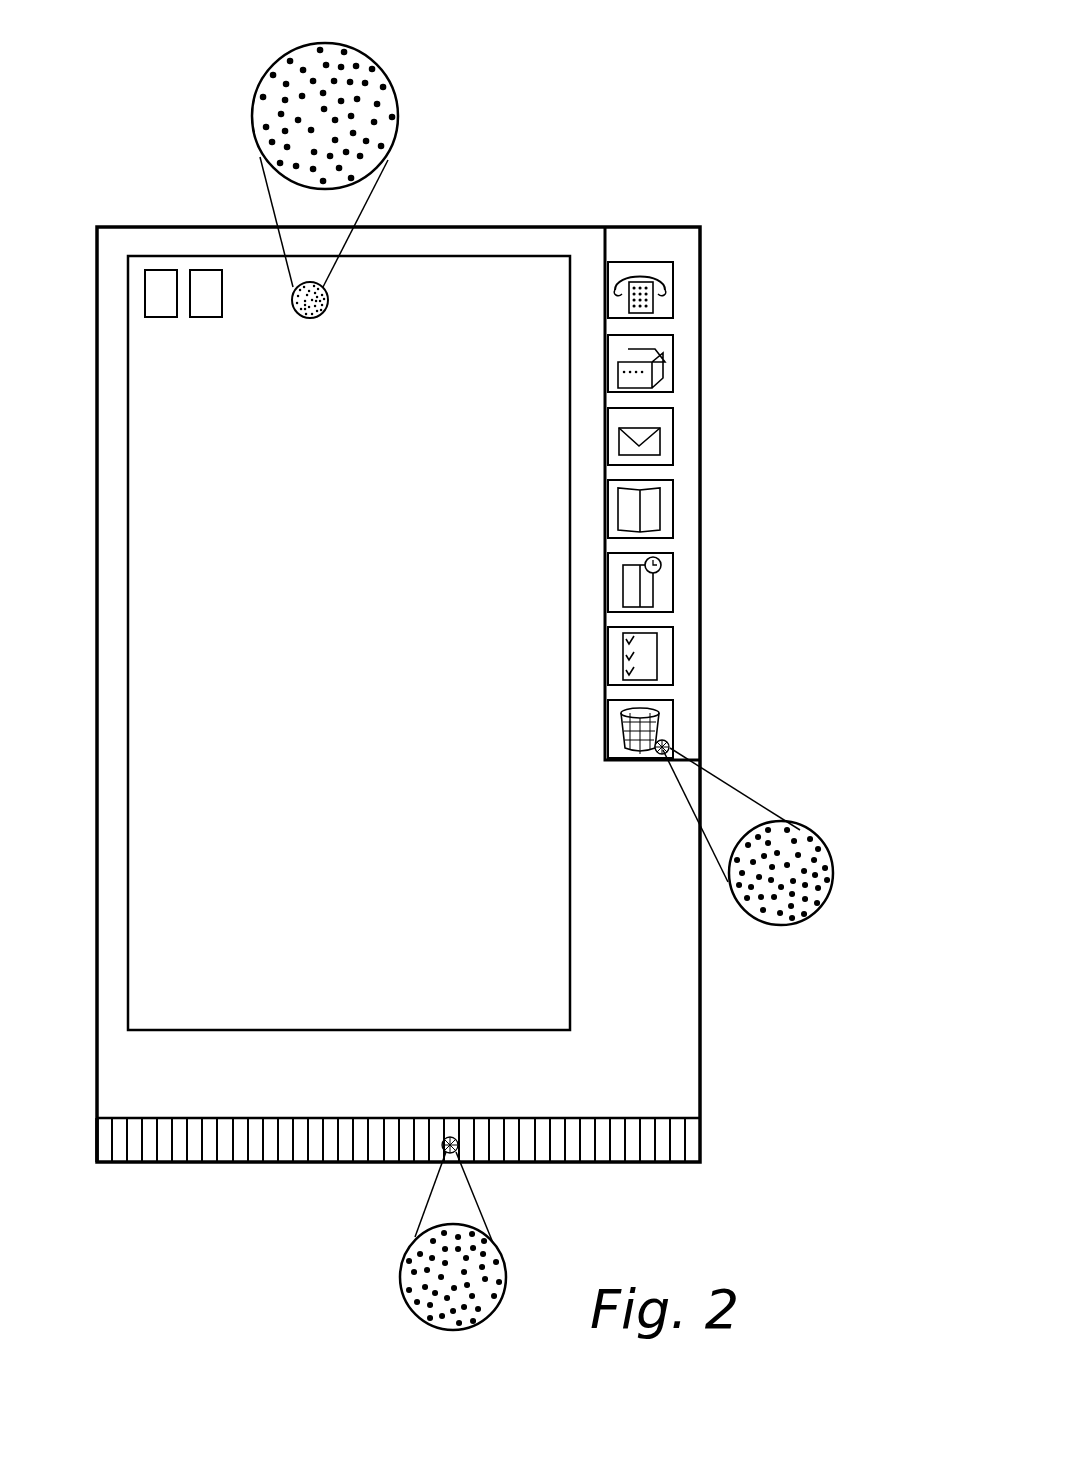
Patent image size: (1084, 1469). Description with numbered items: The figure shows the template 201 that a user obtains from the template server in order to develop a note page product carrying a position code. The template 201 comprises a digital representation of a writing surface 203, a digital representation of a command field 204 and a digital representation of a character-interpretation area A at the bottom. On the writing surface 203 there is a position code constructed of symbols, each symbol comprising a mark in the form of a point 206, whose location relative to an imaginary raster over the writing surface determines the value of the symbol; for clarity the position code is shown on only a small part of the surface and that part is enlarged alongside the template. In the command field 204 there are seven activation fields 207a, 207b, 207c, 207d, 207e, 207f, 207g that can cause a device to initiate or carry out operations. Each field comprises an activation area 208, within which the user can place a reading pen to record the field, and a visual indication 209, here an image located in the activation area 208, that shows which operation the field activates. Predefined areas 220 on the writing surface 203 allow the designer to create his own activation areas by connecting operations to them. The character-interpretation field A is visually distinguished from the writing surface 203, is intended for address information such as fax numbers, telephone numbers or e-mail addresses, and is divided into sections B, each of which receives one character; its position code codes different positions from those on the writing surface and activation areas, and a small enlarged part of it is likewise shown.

The template 201 is at (502, 225).
The writing surface 203 is at (349, 643).
The command field 204 is at (662, 237).
The point 206 is at (372, 70).
The activation field 207a is at (673, 268).
The activation field 207b is at (673, 347).
The activation field 207c is at (670, 423).
The activation field 207d is at (673, 502).
The activation field 207e is at (673, 578).
The activation field 207f is at (673, 657).
The activation field 207g is at (673, 735).
The activation area 208 is at (647, 263).
The visual indication 209 is at (657, 290).
The predefined areas 220 is at (205, 310).
The character-interpretation field A is at (103, 1138).
The sections B is at (313, 1155).